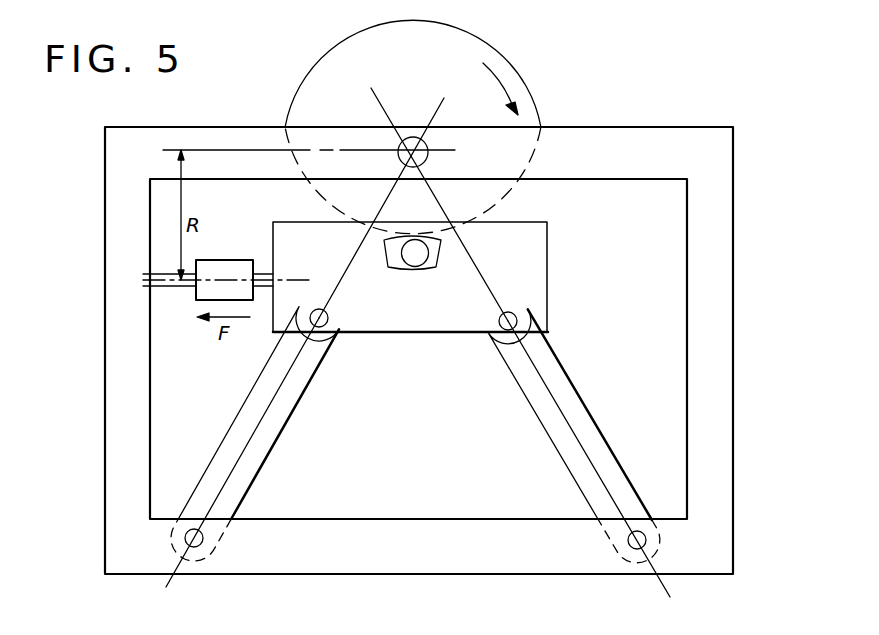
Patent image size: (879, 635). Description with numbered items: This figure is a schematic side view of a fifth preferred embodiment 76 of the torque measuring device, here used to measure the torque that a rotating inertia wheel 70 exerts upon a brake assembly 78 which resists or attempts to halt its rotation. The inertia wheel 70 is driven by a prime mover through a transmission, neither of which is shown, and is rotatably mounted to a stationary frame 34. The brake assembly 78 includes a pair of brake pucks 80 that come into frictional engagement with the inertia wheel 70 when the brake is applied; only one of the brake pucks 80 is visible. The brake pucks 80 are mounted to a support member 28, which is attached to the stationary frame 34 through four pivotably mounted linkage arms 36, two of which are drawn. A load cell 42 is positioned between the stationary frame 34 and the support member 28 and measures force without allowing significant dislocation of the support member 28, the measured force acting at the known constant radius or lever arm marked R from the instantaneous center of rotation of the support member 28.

The inertia wheel 70 is at (497, 47).
The fifth preferred embodiment 76 is at (745, 283).
The support member 28 is at (552, 237).
The load cell 42 is at (238, 260).
The brake pucks 80 is at (413, 263).
The brake assembly 78 is at (427, 335).
The linkage arms 36 is at (257, 465).
The stationary frame 34 is at (393, 562).